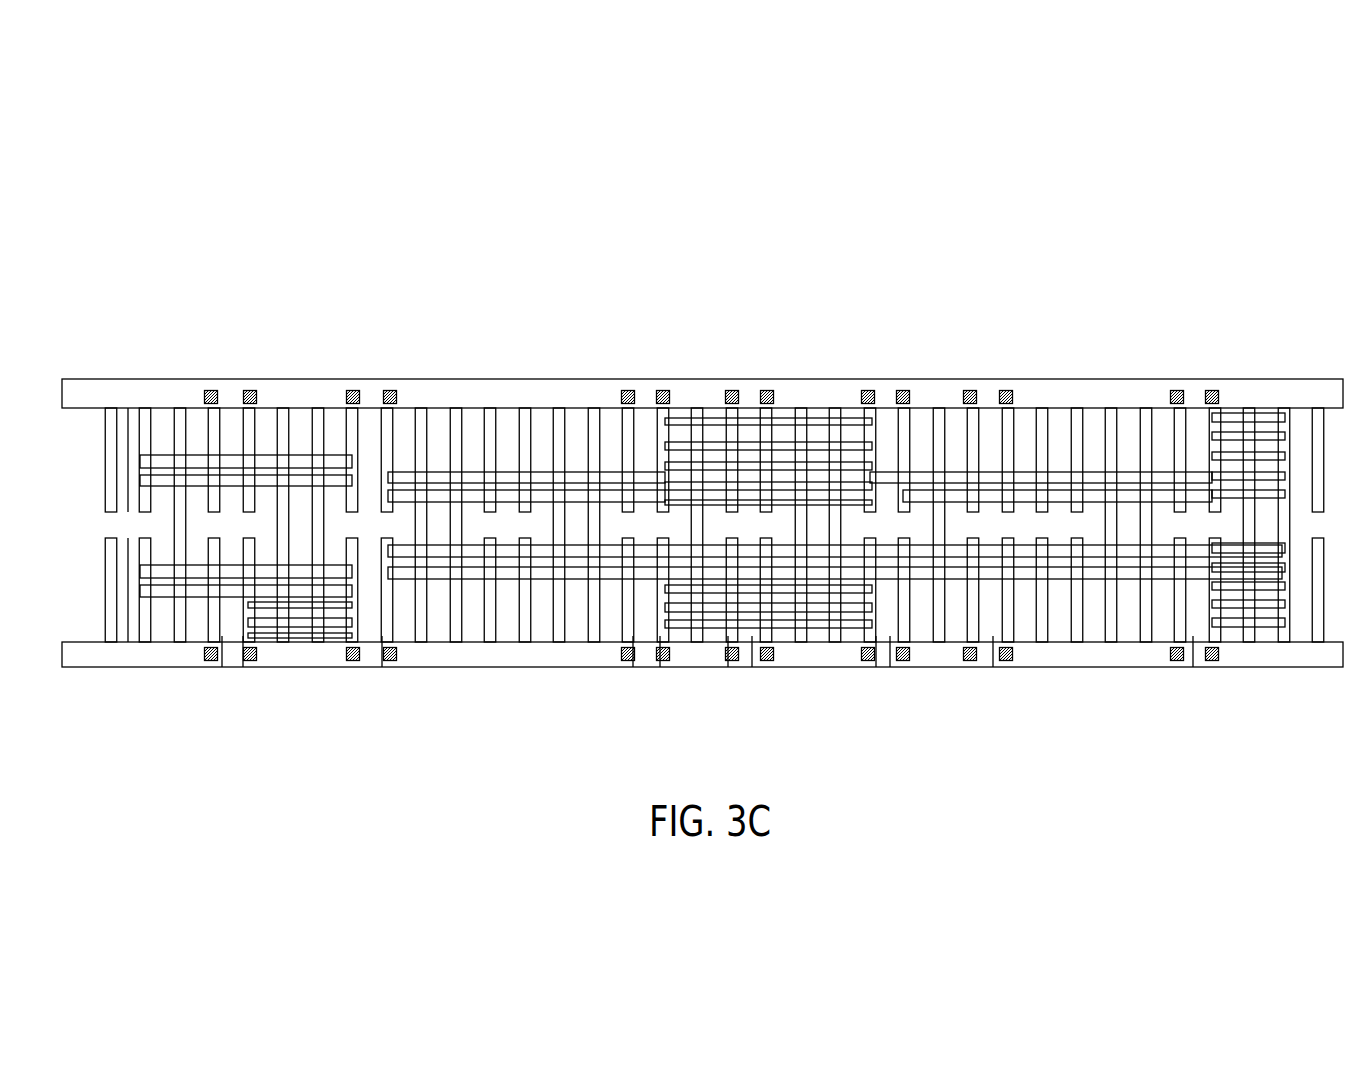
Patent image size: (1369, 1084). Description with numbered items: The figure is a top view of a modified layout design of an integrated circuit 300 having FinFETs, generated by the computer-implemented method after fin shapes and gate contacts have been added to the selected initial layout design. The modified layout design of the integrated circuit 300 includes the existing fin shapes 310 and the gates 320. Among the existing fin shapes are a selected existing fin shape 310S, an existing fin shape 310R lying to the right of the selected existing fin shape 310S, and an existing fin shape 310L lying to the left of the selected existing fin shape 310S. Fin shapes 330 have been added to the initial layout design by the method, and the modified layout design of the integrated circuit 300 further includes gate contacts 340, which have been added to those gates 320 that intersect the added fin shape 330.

The layout design of the integrated circuit 300 is at (522, 177).
The existing fin shapes 310 is at (515, 495).
The existing fin shape to the left of the selected existing fin shape 310L is at (843, 470).
The selected existing fin shape 310S is at (943, 475).
The existing fin shape to the right of the selected existing fin shape 310R is at (1052, 475).
The gates 320 is at (1147, 518).
The added fin shapes 330 is at (643, 473).
The gate contacts 340 is at (663, 642).